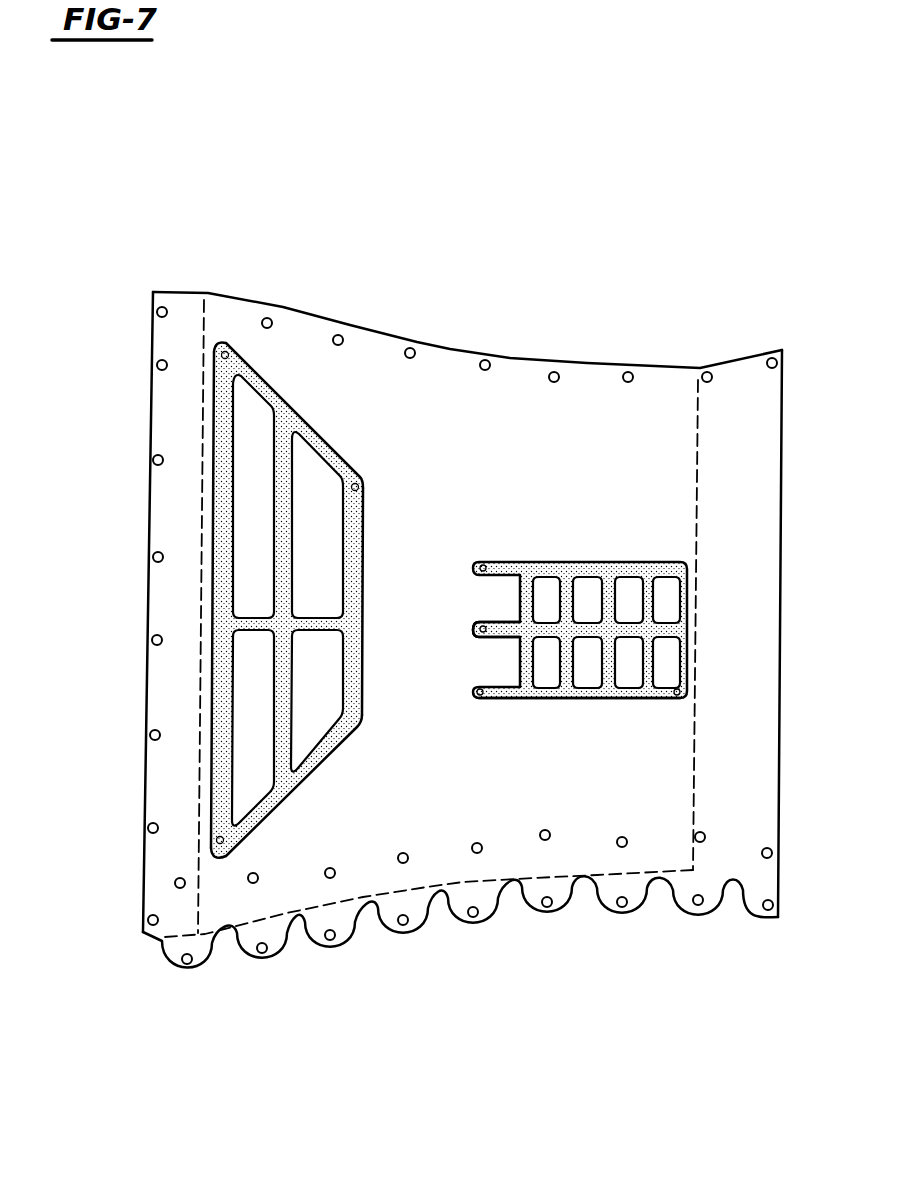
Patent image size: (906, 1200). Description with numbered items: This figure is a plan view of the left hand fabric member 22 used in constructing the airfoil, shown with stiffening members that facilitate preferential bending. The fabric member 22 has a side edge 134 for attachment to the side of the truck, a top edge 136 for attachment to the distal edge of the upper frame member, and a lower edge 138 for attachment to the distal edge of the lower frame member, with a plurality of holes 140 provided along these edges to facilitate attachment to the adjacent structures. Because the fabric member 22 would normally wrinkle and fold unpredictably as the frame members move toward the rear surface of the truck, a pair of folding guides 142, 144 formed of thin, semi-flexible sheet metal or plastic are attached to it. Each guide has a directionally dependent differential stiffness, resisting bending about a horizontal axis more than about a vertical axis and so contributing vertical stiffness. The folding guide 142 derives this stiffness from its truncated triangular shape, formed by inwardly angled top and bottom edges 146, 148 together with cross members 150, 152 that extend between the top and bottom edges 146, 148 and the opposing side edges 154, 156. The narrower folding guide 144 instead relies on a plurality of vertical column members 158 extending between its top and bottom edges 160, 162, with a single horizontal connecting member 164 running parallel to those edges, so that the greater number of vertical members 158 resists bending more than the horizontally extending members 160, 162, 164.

The fabric member 22 is at (794, 724).
The side edge 134 is at (150, 597).
The top edge 136 is at (427, 343).
The lower edge 138 is at (385, 900).
The holes 140 is at (705, 373).
The folding guide 142 is at (362, 474).
The folding guide 144 is at (528, 560).
The top edge 146 is at (308, 424).
The bottom edge 148 is at (304, 774).
The cross member 150 is at (289, 522).
The cross member 152 is at (288, 673).
The side edge 154 is at (212, 497).
The side edge 156 is at (351, 598).
The vertical column members 158 is at (683, 663).
The top edge 160 is at (624, 560).
The bottom edge 162 is at (657, 700).
The horizontal connecting member 164 is at (497, 628).